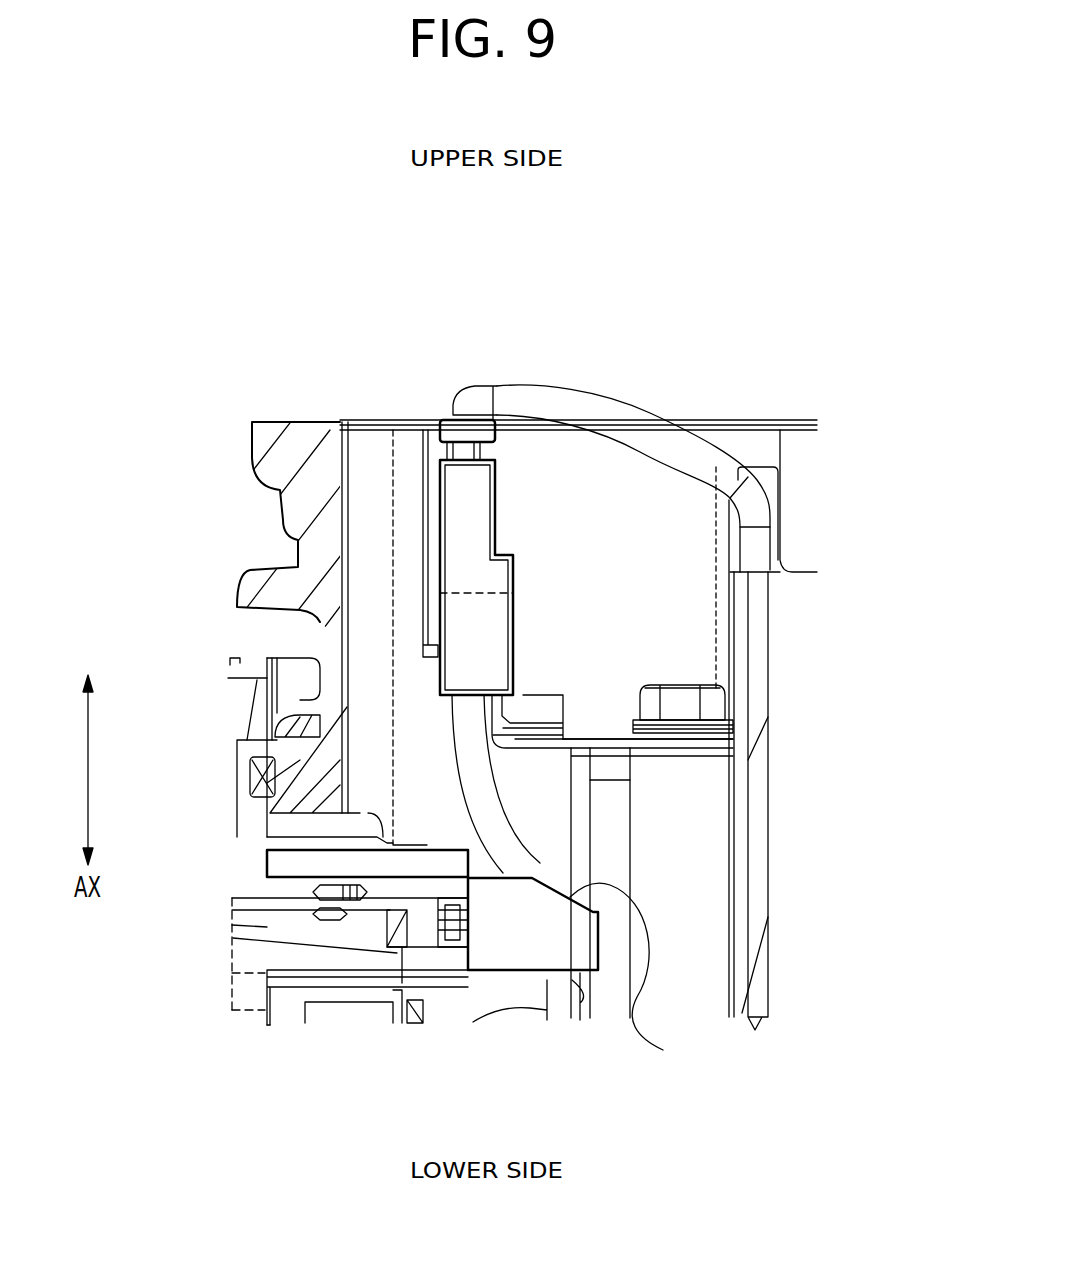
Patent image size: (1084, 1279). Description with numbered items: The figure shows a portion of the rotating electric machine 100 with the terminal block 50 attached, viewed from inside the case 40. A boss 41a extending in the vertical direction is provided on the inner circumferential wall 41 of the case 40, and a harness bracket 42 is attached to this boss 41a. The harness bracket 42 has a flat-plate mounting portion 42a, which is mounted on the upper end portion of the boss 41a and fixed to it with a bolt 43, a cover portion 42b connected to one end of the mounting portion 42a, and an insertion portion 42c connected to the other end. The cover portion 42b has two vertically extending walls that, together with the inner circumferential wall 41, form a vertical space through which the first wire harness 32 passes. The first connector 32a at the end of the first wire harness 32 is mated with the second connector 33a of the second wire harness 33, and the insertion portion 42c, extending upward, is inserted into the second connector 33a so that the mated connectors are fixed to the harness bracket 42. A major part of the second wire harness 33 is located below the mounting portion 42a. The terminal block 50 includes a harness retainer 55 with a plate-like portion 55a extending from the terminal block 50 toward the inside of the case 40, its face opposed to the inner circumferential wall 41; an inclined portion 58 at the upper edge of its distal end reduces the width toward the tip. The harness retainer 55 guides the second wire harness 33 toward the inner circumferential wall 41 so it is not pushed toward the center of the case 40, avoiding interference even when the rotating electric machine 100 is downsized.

The rotating electric machine 100 is at (290, 1038).
The case 40 is at (340, 423).
The first wire harness 32 is at (717, 425).
The first connector 32a is at (500, 495).
The second wire harness 33 is at (453, 775).
The second connector 33a is at (462, 663).
The harness bracket 42 is at (710, 582).
The mounting portion 42a is at (603, 737).
The cover portion 42b is at (723, 675).
The insertion portion 42c is at (503, 735).
The bolt 43 is at (700, 707).
The inner circumferential wall 41 is at (537, 817).
The boss 41a is at (698, 850).
The terminal block 50 is at (233, 938).
The harness retainer 55 is at (530, 937).
The plate-like portion 55a is at (507, 970).
The inclined portion 58 is at (663, 1050).